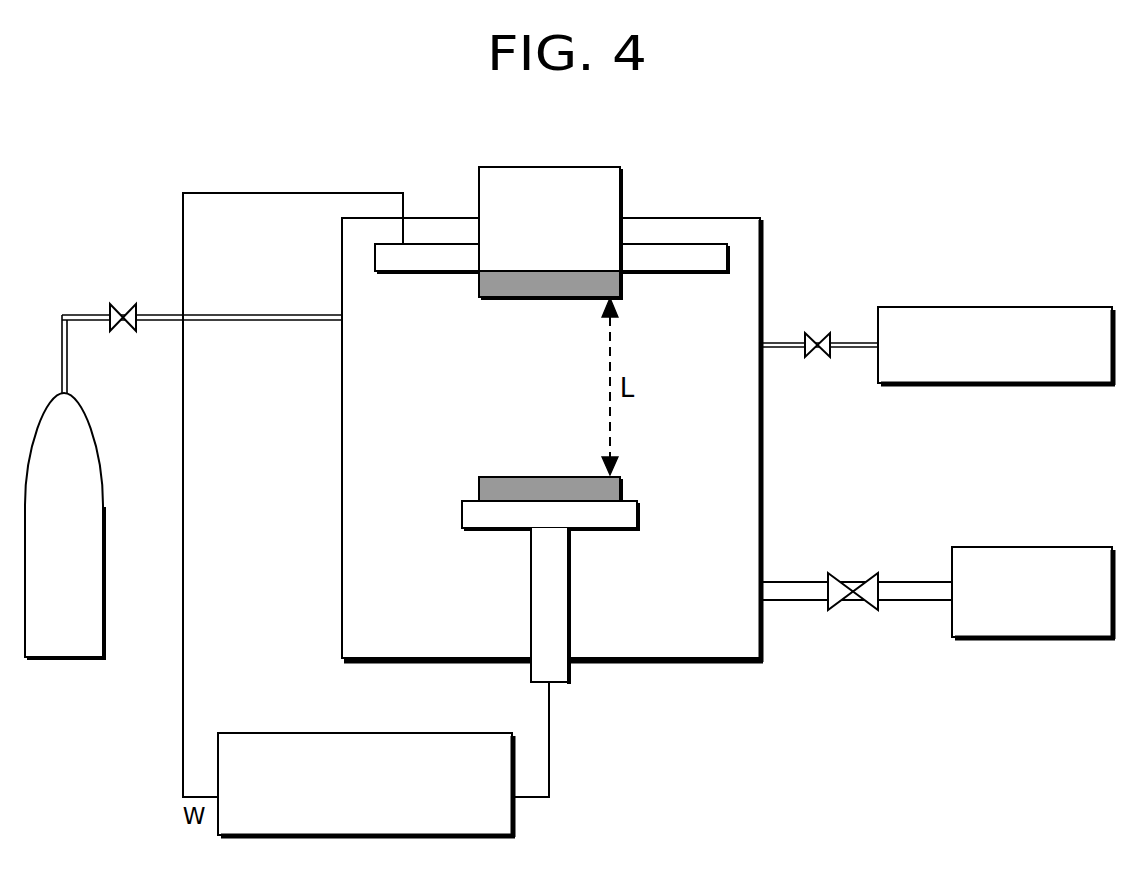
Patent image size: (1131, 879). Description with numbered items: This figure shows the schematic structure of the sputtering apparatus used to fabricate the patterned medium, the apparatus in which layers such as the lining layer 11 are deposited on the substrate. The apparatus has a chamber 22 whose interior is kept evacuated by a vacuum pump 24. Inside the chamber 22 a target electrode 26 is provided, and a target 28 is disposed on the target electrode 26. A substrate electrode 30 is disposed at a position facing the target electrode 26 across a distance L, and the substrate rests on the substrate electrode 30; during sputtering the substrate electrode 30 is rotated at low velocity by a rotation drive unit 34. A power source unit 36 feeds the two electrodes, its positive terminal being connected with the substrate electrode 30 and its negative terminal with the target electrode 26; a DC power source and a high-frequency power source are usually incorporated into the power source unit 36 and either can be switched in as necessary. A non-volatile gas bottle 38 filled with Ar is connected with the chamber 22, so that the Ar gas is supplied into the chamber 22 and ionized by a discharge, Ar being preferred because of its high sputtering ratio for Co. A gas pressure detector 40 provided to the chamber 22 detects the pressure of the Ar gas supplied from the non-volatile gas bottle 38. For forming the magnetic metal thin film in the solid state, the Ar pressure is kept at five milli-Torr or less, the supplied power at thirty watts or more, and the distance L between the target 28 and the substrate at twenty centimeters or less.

The lining layer 11 is at (488, 286).
The chamber 22 is at (762, 244).
The vacuum pump 24 is at (1035, 546).
The target electrode 26 is at (605, 518).
The target 28 is at (610, 493).
The substrate electrode 30 is at (688, 254).
The rotation drive unit 34 is at (546, 182).
The power source unit 36 is at (363, 733).
The non-volatile gas bottle 38 is at (60, 660).
The gas pressure detector 40 is at (998, 306).